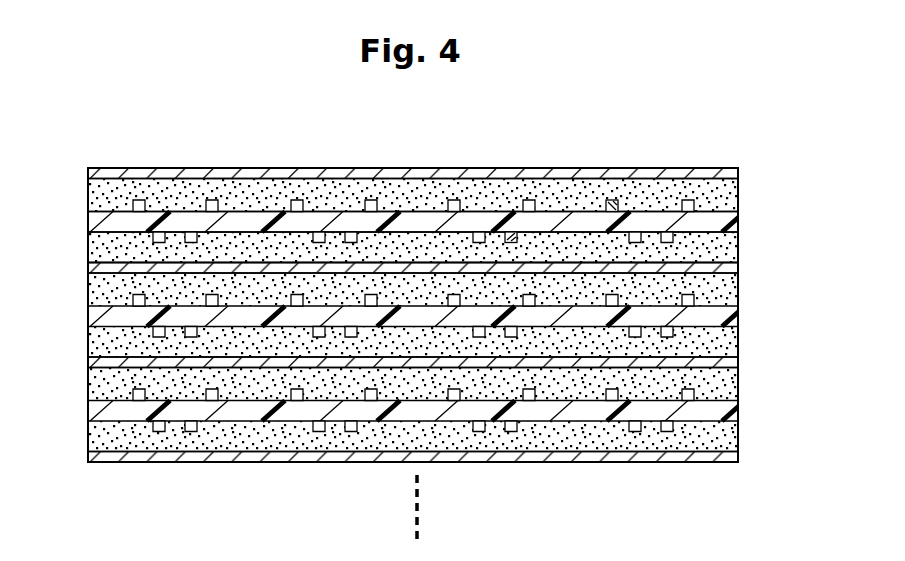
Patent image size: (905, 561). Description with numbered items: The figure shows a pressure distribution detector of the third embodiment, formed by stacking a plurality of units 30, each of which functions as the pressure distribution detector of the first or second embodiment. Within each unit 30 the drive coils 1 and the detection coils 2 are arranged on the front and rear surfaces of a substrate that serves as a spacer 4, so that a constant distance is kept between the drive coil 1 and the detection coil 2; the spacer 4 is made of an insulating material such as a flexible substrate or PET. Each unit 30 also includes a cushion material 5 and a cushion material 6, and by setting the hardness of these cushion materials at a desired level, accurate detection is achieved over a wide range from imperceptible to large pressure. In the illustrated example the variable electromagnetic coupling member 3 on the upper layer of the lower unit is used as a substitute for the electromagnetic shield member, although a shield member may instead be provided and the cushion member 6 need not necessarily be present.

The drive coil 1 is at (502, 232).
The detection coil 2 is at (612, 200).
The variable electromagnetic coupling member 3 is at (722, 178).
The spacer 4 is at (738, 217).
The cushion material 5 is at (738, 184).
The cushion material 6 is at (738, 247).
The unit 30 is at (82, 170).